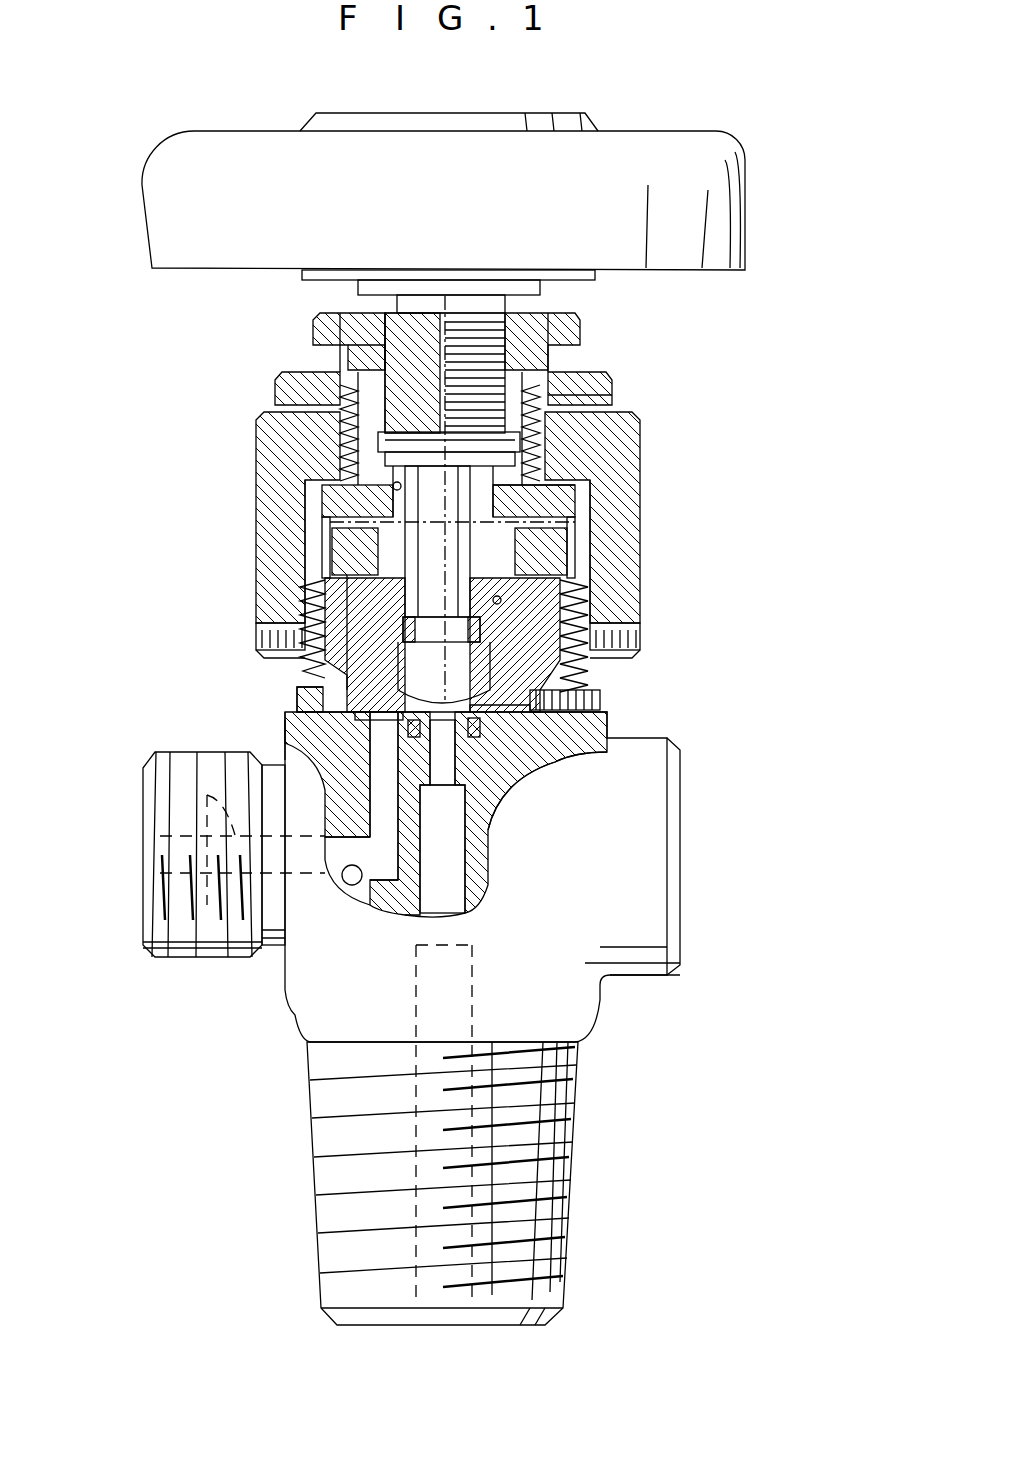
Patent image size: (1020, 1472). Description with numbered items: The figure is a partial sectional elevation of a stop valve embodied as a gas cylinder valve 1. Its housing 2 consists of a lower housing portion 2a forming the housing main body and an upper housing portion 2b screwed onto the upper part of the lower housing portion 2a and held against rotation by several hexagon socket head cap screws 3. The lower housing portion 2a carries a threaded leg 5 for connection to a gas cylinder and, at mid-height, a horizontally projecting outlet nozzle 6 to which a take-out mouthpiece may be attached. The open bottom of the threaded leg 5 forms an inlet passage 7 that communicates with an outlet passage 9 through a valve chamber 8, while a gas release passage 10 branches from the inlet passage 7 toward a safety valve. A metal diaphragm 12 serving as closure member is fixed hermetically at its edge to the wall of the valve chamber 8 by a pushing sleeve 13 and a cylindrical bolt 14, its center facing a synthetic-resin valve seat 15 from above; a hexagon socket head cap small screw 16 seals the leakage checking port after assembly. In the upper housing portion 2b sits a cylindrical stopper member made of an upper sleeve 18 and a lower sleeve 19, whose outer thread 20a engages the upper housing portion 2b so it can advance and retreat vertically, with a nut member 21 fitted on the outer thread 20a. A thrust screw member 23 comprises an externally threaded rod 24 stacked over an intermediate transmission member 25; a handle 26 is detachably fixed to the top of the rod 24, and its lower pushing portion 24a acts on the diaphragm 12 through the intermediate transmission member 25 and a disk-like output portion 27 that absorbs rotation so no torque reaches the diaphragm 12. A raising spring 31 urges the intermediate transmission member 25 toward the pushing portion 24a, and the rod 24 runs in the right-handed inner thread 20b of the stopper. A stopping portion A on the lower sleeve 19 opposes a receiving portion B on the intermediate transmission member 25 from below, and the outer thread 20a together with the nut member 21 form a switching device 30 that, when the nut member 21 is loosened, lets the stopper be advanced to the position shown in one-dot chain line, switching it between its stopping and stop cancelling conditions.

The gas cylinder valve 1 is at (160, 545).
The housing 2 is at (158, 585).
The lower housing portion 2a is at (275, 718).
The upper housing portion 2b is at (248, 576).
The hexagon socket head cap screws 3 is at (610, 628).
The threaded leg 5 is at (572, 1192).
The outlet nozzle 6 is at (208, 958).
The inlet passage 7 is at (440, 908).
The valve chamber 8 is at (360, 746).
The outlet passage 9 is at (360, 885).
The gas release passage 10 is at (468, 882).
The metal diaphragm 12 is at (518, 732).
The pushing sleeve 13 is at (540, 592).
The cylindrical bolt 14 is at (560, 548).
The valve seat 15 is at (474, 742).
The hexagon socket head cap small screw 16 is at (600, 700).
The upper sleeve 18 is at (580, 338).
The lower sleeve 19 is at (600, 412).
The outer thread 20a is at (345, 432).
The inner thread 20b is at (385, 355).
The nut member 21 is at (340, 392).
The thrust screw member 23 is at (515, 345).
The externally threaded rod 24 is at (430, 313).
The pushing portion 24a is at (410, 462).
The intermediate transmission member 25 is at (505, 605).
The handle 26 is at (742, 152).
The output portion 27 is at (468, 706).
The switching device 30 is at (172, 352).
The raising spring 31 is at (398, 590).
The stopping portion A is at (390, 488).
The receiving portion B is at (443, 496).